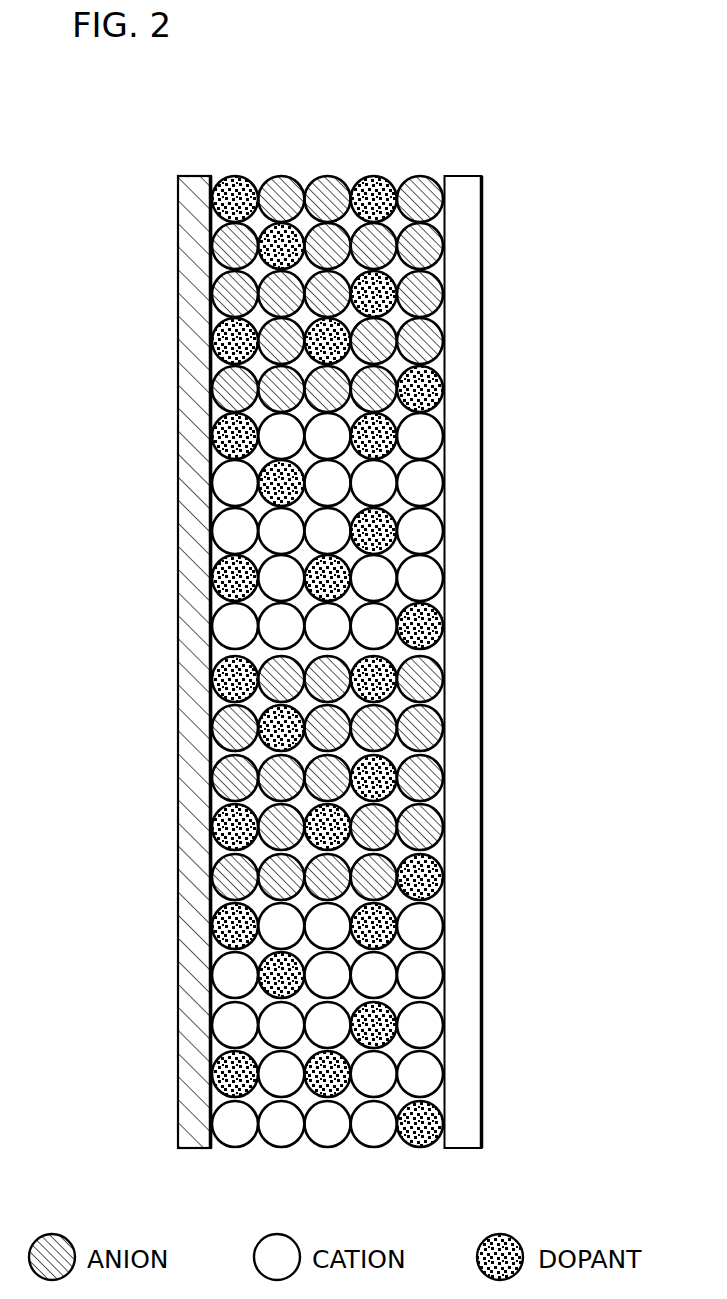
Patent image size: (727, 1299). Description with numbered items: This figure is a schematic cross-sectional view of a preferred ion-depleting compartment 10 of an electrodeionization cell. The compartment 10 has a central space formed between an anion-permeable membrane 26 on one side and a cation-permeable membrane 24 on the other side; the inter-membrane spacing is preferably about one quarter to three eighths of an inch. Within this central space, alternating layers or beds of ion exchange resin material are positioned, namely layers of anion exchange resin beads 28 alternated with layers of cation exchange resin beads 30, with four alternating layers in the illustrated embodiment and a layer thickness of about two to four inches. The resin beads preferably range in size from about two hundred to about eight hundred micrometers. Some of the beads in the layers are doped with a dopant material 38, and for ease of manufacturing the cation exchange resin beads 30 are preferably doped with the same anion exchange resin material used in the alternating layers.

The ion-depleting compartment 10 is at (150, 130).
The cation-permeable membrane 24 is at (483, 630).
The anion-permeable membrane 26 is at (177, 638).
The anion exchange resin beads 28 is at (420, 175).
The cation exchange resin beads 30 is at (273, 1133).
The dopant material 38 is at (373, 175).